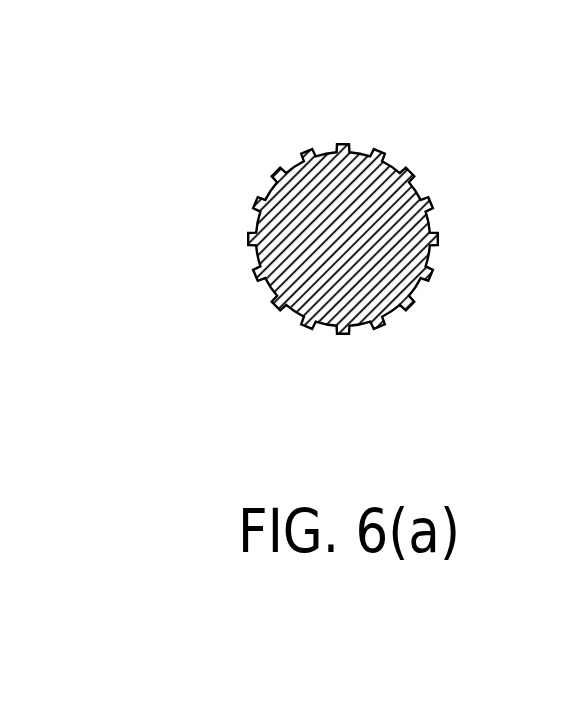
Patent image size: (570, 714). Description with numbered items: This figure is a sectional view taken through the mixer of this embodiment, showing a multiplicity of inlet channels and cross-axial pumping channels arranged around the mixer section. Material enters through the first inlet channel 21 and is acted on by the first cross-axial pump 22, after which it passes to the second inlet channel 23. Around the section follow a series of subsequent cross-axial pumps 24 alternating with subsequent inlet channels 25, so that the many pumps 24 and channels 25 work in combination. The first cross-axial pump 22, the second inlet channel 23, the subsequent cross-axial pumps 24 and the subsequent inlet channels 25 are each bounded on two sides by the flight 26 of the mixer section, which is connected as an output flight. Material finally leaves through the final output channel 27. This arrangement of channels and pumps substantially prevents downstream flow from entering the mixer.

The first inlet channel 21 is at (420, 190).
The first cross-axial pump 22 is at (432, 207).
The second inlet channel 23 is at (388, 158).
The subsequent cross-axial pump 24 is at (296, 160).
The subsequent inlet channel 25 is at (292, 160).
The flight 26 is at (447, 242).
The final output channel 27 is at (433, 225).